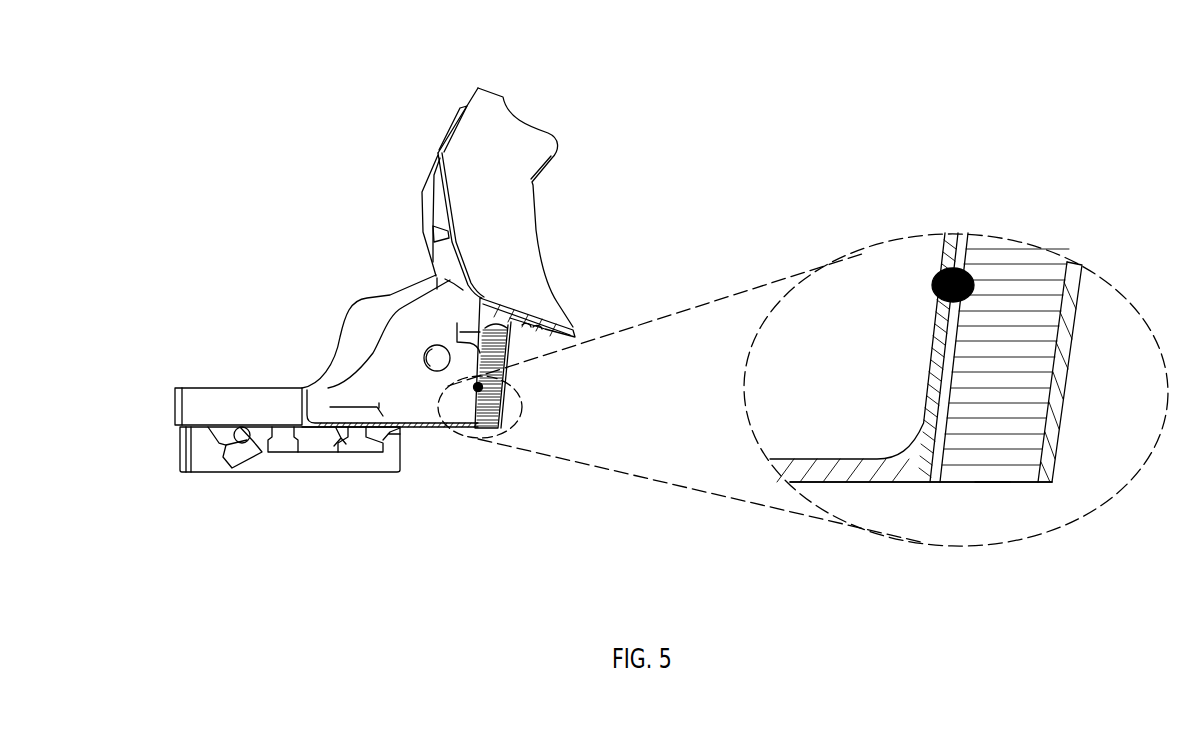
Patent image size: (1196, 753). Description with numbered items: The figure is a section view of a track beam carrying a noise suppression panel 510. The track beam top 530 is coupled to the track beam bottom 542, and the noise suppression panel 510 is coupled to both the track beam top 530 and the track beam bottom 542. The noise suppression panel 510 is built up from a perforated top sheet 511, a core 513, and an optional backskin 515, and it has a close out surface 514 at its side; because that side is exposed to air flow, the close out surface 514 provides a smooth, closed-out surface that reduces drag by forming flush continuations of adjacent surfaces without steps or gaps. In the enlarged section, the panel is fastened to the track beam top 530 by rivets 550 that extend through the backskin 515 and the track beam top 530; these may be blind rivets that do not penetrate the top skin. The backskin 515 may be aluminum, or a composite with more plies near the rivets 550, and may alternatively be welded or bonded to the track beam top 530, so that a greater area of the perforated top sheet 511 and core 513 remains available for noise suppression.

The noise suppression panel 510 is at (1058, 127).
The perforated top sheet 511 is at (1073, 368).
The core 513 is at (1043, 265).
The close out surface 514 is at (948, 624).
The backskin 515 is at (922, 483).
The track beam top 530 is at (312, 269).
The track beam bottom 542 is at (632, 234).
The rivets 550 is at (938, 268).